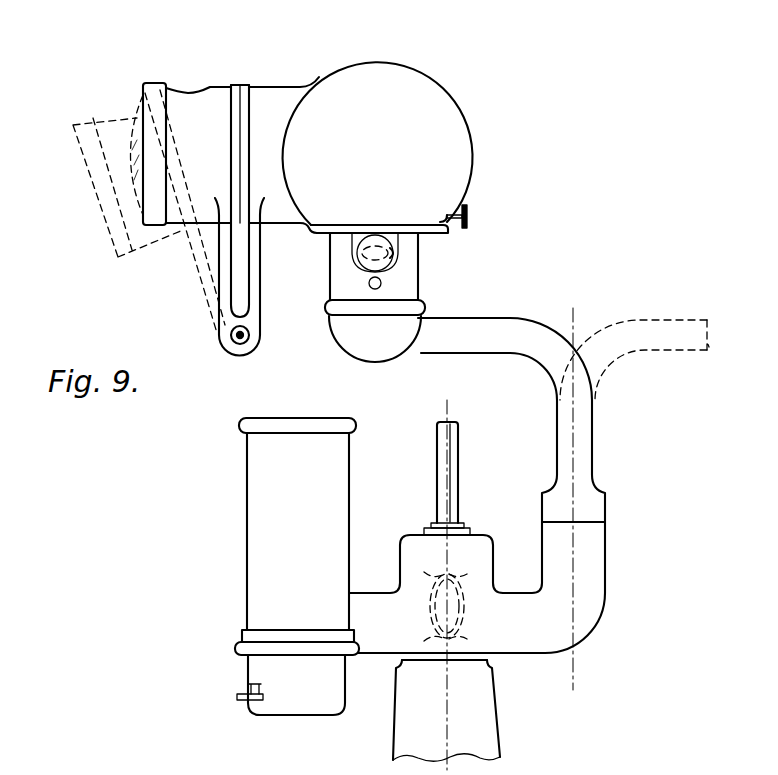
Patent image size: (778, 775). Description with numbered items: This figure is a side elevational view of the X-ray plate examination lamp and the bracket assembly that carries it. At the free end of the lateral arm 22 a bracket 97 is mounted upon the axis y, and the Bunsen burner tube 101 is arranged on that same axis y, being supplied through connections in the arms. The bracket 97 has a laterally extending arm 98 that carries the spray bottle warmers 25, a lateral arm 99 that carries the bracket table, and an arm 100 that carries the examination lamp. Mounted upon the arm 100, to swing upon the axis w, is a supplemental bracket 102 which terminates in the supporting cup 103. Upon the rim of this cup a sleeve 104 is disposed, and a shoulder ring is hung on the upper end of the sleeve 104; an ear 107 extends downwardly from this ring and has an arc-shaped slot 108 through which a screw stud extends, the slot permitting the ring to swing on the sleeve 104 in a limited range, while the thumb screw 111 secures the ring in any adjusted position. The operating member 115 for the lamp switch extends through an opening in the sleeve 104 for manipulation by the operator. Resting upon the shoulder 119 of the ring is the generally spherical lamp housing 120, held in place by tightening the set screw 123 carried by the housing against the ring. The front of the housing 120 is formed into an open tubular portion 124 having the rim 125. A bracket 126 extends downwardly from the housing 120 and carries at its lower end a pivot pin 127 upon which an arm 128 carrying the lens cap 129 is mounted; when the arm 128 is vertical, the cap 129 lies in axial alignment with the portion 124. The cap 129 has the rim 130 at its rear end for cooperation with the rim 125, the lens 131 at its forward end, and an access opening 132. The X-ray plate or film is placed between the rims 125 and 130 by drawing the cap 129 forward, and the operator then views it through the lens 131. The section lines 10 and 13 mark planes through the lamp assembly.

The section line 10 is at (375, 52).
The section line 13 is at (295, 226).
The lateral arm 22 is at (398, 736).
The spray bottle warmers 25 is at (253, 503).
The bracket 97 is at (477, 648).
The laterally extending arm 98 is at (380, 648).
The lateral arm 99 is at (462, 598).
The arm 100 is at (594, 592).
The Bunsen burner tube 101 is at (455, 478).
The supplemental bracket 102 is at (525, 345).
The supporting cup 103 is at (352, 343).
The sleeve 104 is at (414, 269).
The ear 107 is at (353, 250).
The arc-shaped slot 108 is at (398, 253).
The thumb screw 111 is at (380, 246).
The operating member 115 is at (369, 284).
The shoulder 119 is at (352, 222).
The lamp housing 120 is at (466, 136).
The set screw 123 is at (472, 213).
The open tubular portion 124 is at (268, 213).
The rim 125 is at (254, 92).
The bracket 126 is at (255, 306).
The pivot pin 127 is at (251, 341).
The arm 128 is at (225, 282).
The lens cap 129 is at (177, 93).
The rim 130 is at (245, 92).
The lens 131 is at (140, 125).
The access opening 132 is at (198, 88).
The axis w is at (572, 458).
The axis y is at (447, 502).